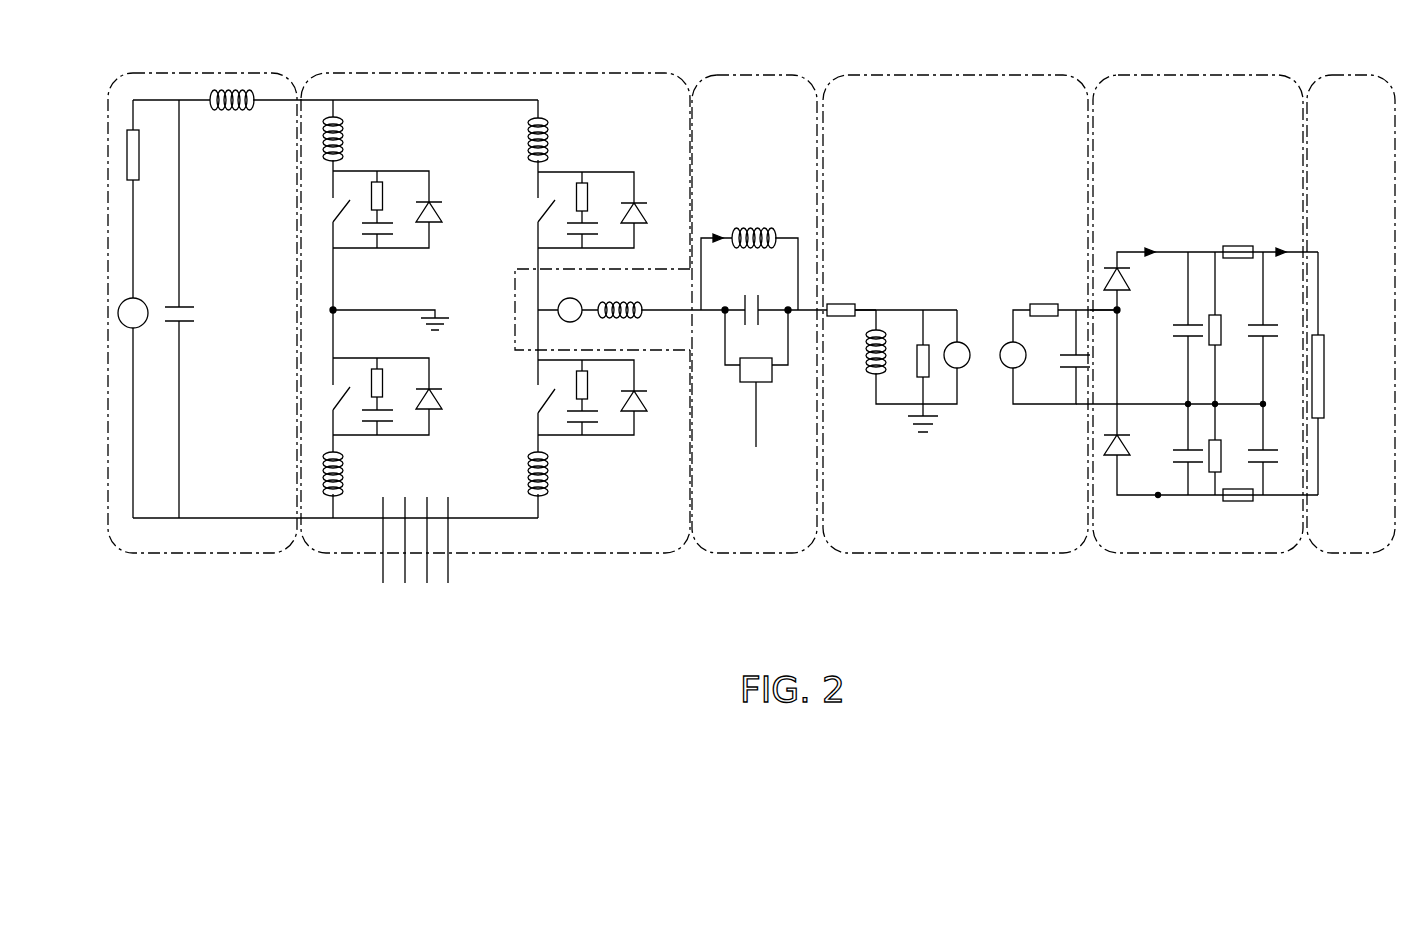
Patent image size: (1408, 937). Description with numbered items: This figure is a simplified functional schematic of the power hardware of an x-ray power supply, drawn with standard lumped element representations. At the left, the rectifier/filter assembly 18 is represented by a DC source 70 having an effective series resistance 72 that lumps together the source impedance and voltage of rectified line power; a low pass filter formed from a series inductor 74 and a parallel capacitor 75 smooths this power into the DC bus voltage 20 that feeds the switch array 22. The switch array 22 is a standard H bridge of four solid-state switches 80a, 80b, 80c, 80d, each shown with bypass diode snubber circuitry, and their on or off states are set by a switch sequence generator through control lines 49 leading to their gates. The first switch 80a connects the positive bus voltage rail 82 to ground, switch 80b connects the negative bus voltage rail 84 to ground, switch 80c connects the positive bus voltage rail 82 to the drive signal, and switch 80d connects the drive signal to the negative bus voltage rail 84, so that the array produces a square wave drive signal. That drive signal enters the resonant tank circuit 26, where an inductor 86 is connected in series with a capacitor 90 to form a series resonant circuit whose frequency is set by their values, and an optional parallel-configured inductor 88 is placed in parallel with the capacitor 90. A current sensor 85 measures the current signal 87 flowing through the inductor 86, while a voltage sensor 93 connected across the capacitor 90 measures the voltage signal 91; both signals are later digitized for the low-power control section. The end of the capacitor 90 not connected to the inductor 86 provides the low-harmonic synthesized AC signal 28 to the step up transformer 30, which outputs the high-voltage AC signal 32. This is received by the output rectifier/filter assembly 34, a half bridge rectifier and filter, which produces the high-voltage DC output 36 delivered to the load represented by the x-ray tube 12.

The x-ray tube 12 is at (1326, 362).
The rectifier/filter assembly 18 is at (222, 477).
The DC bus voltage 20 is at (320, 99).
The switch array 22 is at (457, 480).
The resonant tank circuit 26 is at (739, 525).
The synthesized AC signal 28 is at (806, 302).
The step up transformer 30 is at (950, 494).
The high-voltage AC signal 32 is at (1096, 304).
The output rectifier/filter assembly 34 is at (1180, 179).
The high-voltage DC output 36 is at (1320, 270).
The control lines 49 is at (440, 590).
The DC source 70 is at (118, 313).
The effective series resistance 72 is at (126, 152).
The series inductor 74 is at (232, 111).
The parallel capacitor 75 is at (183, 305).
The first switch 80a is at (343, 198).
The switch 80b is at (343, 385).
The switch 80c is at (548, 198).
The switch 80d is at (545, 400).
The positive bus voltage rail 82 is at (466, 73).
The negative bus voltage rail 84 is at (520, 519).
The current sensor 85 is at (560, 300).
The inductor 86 is at (625, 320).
The current signal 87 is at (558, 318).
The parallel-configured inductor 88 is at (752, 225).
The capacitor 90 is at (745, 300).
The voltage signal 91 is at (756, 440).
The voltage sensor 93 is at (763, 384).